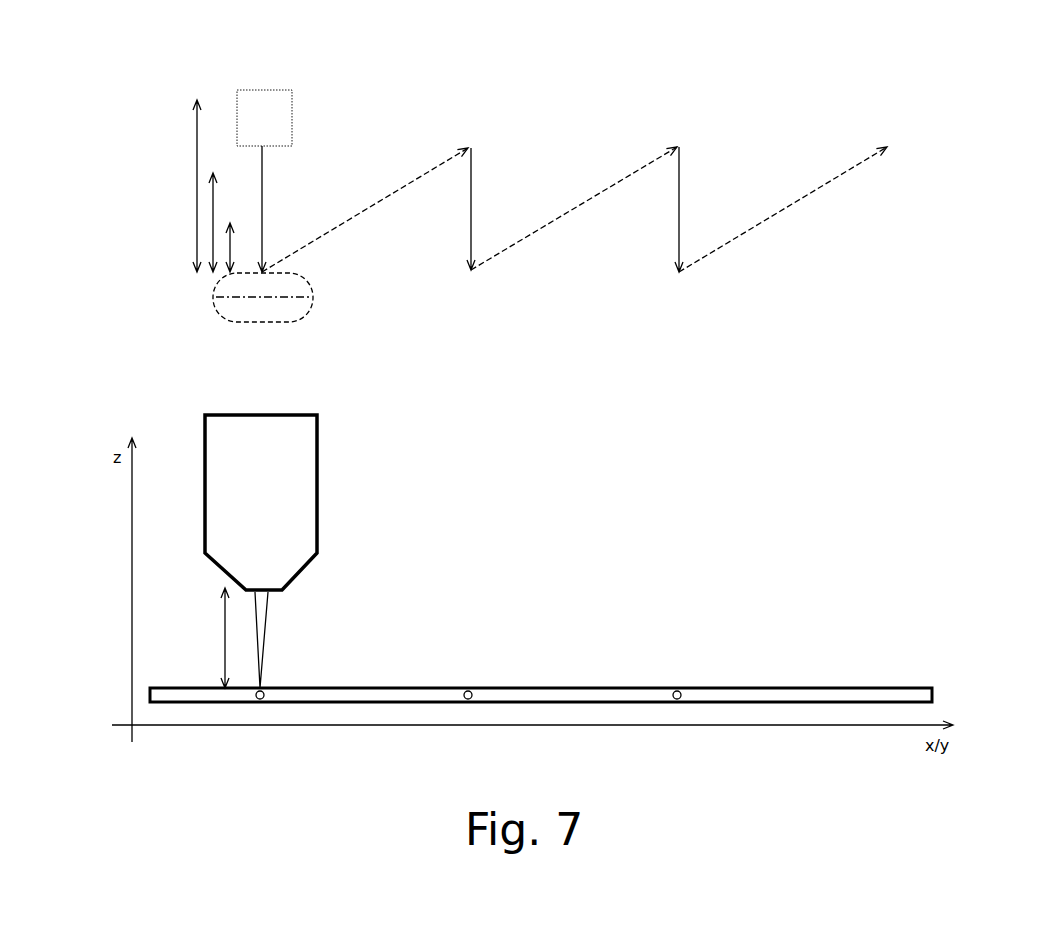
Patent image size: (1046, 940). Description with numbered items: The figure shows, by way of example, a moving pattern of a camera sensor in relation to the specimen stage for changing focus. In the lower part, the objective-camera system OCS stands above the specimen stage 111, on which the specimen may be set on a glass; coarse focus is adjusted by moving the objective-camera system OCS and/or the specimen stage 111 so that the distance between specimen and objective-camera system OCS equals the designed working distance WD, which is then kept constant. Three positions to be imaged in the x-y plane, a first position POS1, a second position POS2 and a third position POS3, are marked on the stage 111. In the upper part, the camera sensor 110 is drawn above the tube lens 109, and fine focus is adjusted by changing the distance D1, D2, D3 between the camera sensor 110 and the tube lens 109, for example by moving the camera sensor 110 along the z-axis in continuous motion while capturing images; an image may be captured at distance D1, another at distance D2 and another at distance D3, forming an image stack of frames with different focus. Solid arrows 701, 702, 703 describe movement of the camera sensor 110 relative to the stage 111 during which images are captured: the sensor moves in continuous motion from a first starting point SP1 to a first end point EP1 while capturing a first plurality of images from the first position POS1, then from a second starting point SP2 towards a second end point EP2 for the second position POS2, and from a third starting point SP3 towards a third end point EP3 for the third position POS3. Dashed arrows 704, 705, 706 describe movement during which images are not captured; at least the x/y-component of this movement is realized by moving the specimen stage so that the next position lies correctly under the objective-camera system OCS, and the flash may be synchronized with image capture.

The camera sensor 110 is at (267, 108).
The tube lens 109 is at (313, 298).
The specimen stage 111 is at (823, 693).
The first solid arrow 701 is at (262, 205).
The second solid arrow 702 is at (473, 158).
The third solid arrow 703 is at (682, 160).
The first dashed arrow 704 is at (332, 228).
The second dashed arrow 705 is at (525, 243).
The third dashed arrow 706 is at (747, 232).
The first distance D1 is at (197, 110).
The second distance D2 is at (213, 187).
The third distance D3 is at (230, 240).
The first starting point SP1 is at (262, 146).
The second starting point SP2 is at (472, 147).
The third starting point SP3 is at (680, 145).
The first end point EP1 is at (359, 263).
The second end point EP2 is at (487, 263).
The third end point EP3 is at (693, 267).
The objective-camera system OCS is at (308, 517).
The working distance WD is at (225, 603).
The first position POS1 is at (258, 702).
The second position POS2 is at (468, 702).
The third position POS3 is at (677, 702).